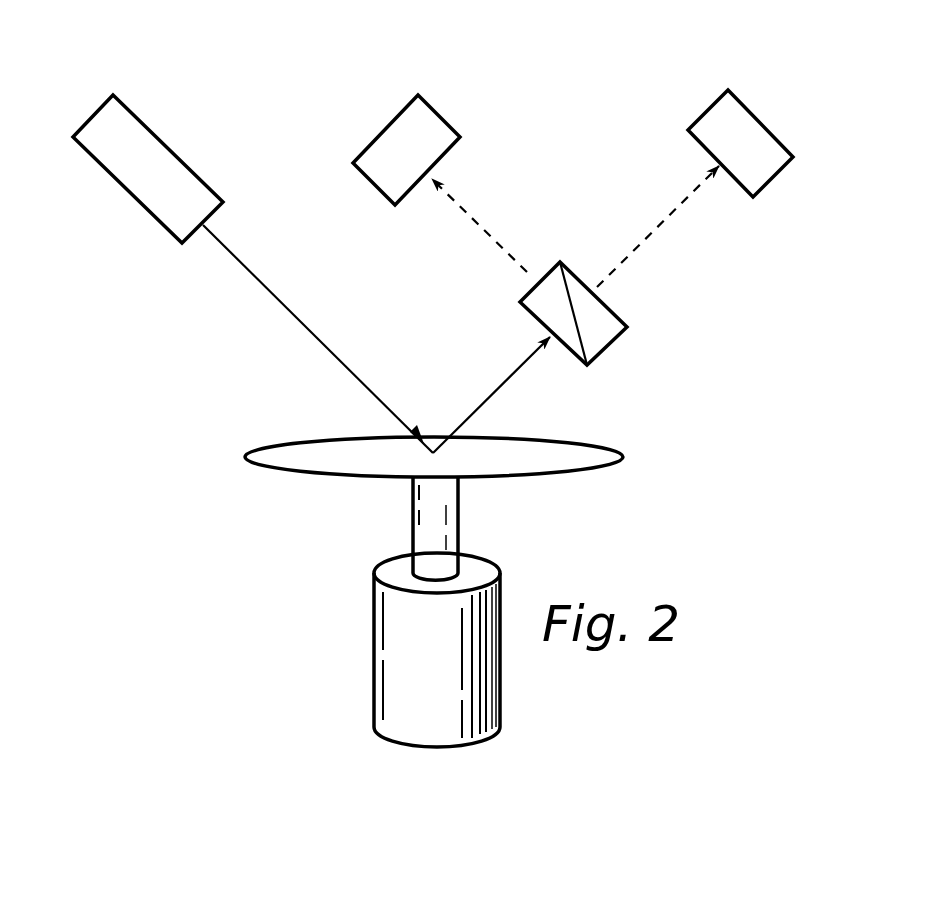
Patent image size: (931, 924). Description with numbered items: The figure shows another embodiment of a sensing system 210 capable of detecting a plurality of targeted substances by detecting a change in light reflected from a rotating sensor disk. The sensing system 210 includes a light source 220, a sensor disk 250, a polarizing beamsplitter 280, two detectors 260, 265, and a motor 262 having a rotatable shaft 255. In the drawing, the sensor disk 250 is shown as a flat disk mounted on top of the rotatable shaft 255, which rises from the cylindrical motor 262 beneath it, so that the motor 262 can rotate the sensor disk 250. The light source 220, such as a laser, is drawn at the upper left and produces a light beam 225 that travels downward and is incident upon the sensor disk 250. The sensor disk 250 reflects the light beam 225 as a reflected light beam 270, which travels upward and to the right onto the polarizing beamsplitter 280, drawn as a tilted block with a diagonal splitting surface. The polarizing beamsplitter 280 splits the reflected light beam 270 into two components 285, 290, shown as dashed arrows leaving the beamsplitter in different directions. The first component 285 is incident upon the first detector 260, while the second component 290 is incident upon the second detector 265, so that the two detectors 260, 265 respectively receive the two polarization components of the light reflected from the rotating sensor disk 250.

The sensing system 210 is at (620, 70).
The light source 220 is at (184, 194).
The light beam 225 is at (243, 262).
The sensor disk 250 is at (531, 465).
The rotatable shaft 255 is at (413, 515).
The motor 262 is at (373, 647).
The light beam 270 is at (495, 383).
The polarizing beamsplitter 280 is at (612, 347).
The component 285 is at (473, 226).
The component 290 is at (635, 241).
The detector 260 is at (426, 161).
The detector 265 is at (764, 154).